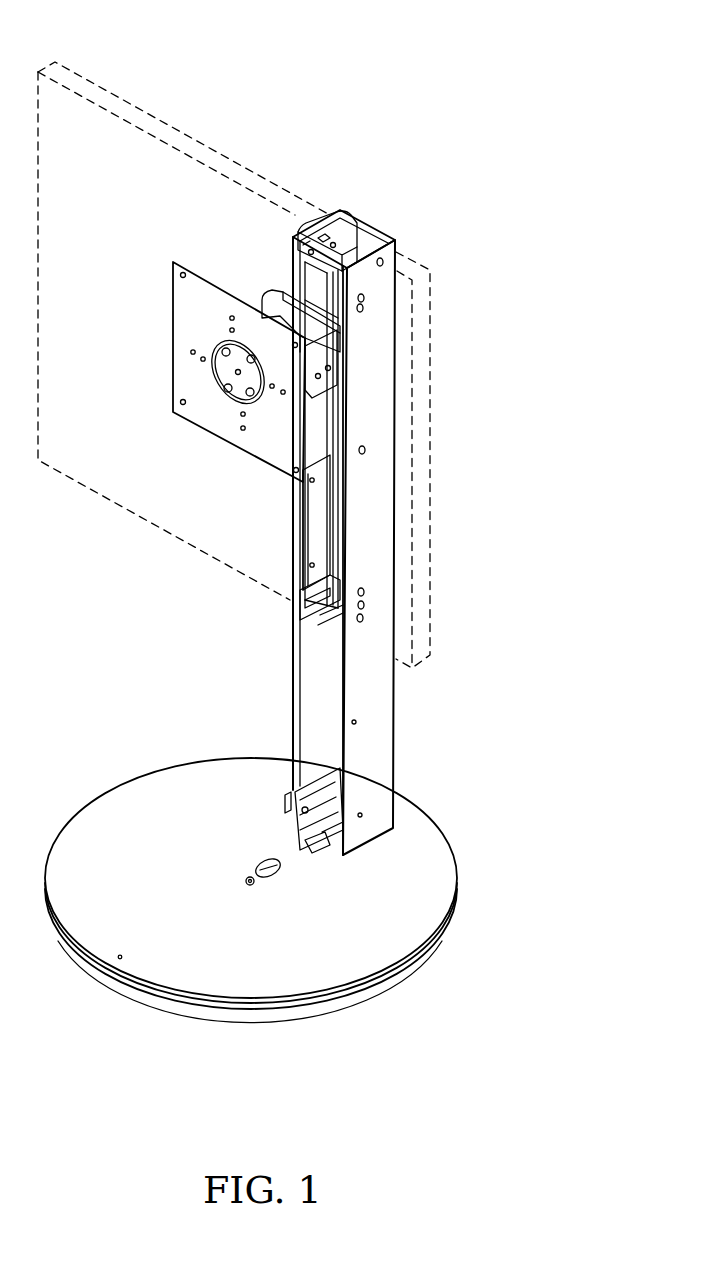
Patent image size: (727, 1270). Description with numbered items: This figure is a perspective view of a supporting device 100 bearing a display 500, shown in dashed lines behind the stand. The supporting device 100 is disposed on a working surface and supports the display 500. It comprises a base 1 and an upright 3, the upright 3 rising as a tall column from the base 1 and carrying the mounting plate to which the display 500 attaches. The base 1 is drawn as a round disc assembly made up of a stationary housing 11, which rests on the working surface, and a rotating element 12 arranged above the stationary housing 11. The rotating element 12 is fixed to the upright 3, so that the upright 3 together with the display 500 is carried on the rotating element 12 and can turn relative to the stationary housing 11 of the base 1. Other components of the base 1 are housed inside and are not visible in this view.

The supporting device 100 is at (522, 30).
The display 500 is at (117, 125).
The upright 3 is at (381, 717).
The base 1 is at (455, 835).
The rotating element 12 is at (438, 882).
The stationary housing 11 is at (428, 960).